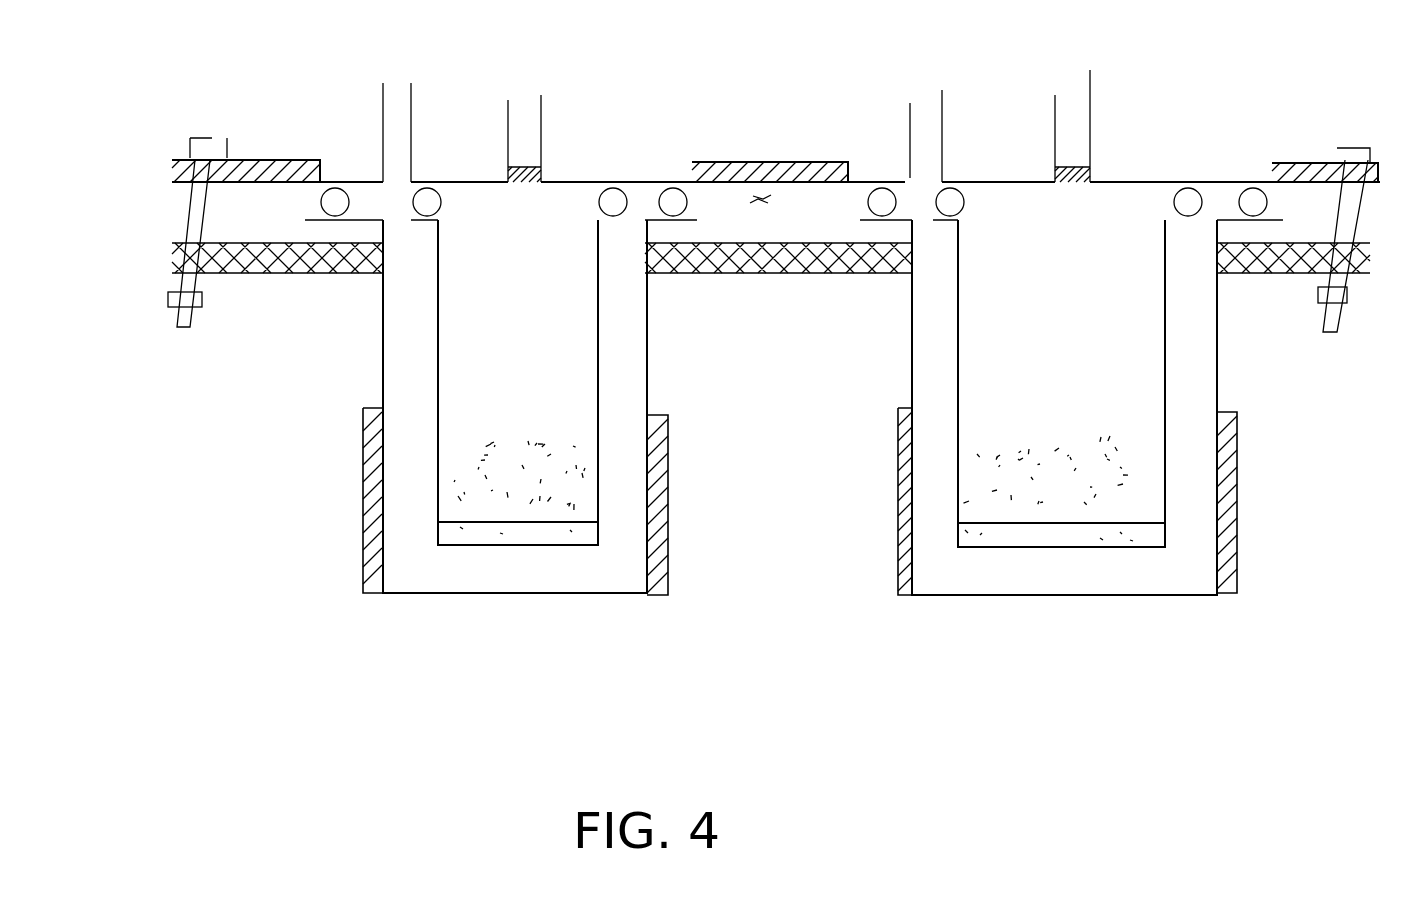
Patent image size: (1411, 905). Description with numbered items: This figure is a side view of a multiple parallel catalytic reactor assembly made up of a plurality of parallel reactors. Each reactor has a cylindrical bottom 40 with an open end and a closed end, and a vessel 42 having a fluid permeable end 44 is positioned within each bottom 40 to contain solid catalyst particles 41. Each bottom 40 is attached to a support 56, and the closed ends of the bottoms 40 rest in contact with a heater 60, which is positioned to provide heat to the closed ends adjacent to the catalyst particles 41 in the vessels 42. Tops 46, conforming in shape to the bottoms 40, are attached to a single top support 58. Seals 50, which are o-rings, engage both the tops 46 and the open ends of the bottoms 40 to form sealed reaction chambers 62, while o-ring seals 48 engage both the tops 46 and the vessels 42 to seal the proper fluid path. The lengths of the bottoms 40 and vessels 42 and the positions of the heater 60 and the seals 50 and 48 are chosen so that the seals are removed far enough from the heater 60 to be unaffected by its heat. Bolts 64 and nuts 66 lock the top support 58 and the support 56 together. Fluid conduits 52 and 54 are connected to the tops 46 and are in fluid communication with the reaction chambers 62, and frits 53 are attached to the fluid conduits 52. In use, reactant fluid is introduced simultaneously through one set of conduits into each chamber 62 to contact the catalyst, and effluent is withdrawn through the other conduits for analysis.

The bottom 40 is at (647, 355).
The solid catalyst particles 41 is at (540, 480).
The vessel 42 is at (598, 355).
The fluid permeable end 44 is at (598, 530).
The top 46 is at (618, 180).
The o-ring seal 48 is at (620, 184).
The seal 50 is at (340, 187).
The fluid conduit 52 is at (517, 122).
The frit 53 is at (572, 180).
The fluid conduit 54 is at (390, 115).
The support 56 is at (273, 245).
The top support 58 is at (250, 160).
The heater 60 is at (363, 560).
The sealed reaction chamber 62 is at (470, 305).
The bolt 64 is at (190, 136).
The nut 66 is at (202, 299).